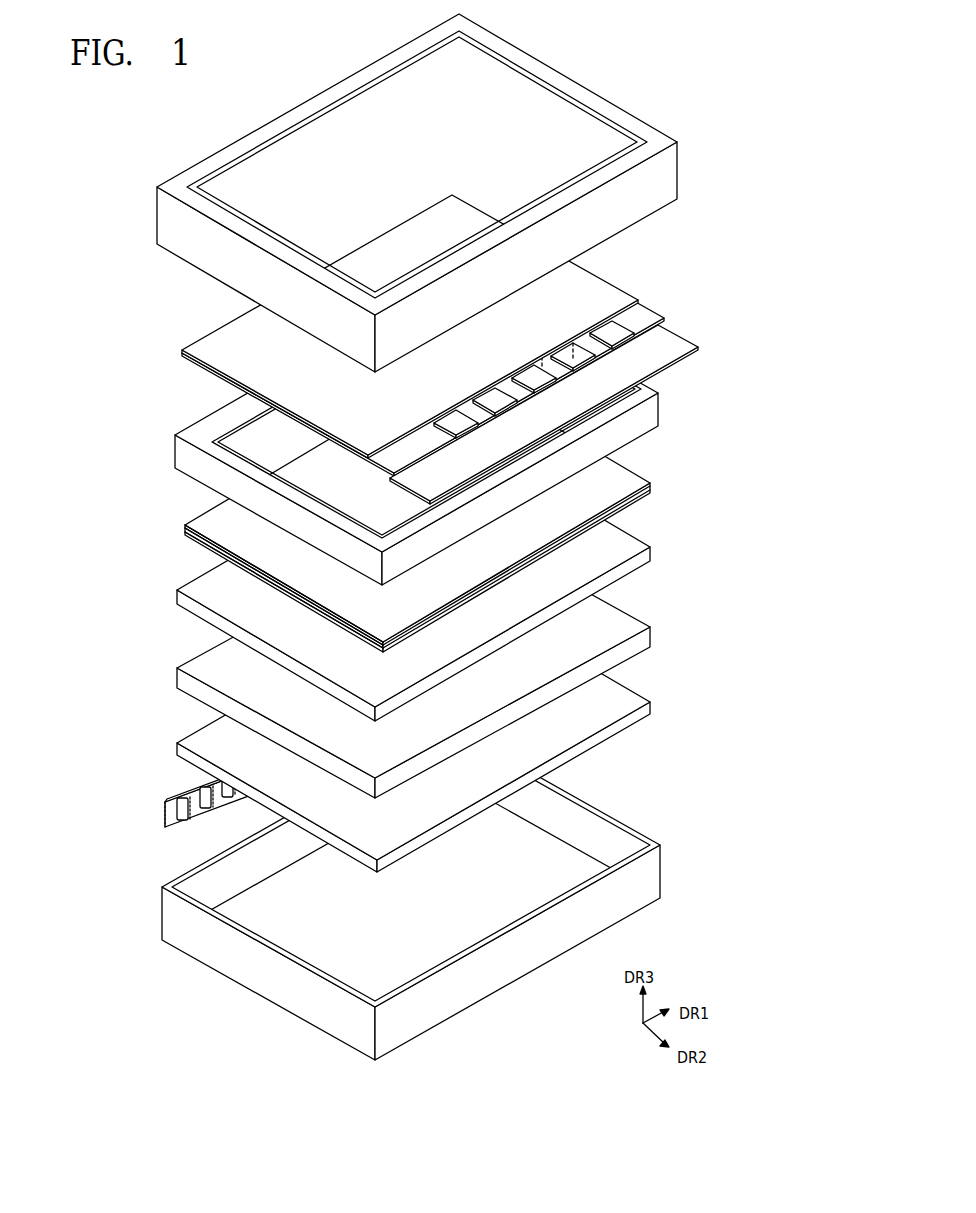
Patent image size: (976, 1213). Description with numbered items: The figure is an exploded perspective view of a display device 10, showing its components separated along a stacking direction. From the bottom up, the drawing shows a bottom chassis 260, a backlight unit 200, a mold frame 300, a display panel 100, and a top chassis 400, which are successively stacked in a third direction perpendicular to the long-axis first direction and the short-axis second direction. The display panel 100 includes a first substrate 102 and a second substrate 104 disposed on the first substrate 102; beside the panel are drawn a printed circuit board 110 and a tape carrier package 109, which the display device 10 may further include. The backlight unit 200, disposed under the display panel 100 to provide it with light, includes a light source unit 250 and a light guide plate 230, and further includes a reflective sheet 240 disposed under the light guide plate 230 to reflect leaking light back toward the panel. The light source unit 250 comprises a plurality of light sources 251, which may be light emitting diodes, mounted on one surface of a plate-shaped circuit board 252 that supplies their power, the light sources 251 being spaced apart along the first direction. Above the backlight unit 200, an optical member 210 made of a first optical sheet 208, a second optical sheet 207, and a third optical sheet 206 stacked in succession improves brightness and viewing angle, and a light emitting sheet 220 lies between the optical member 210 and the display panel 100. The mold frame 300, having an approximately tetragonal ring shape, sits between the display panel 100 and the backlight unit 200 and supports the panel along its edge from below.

The display device 10 is at (381, 535).
The display panel 100 is at (454, 349).
The first substrate 102 is at (574, 288).
The second substrate 104 is at (560, 274).
The tape carrier package 109 is at (630, 298).
The printed circuit board 110 is at (650, 352).
The backlight unit 200 is at (340, 788).
The third optical sheet 206 is at (188, 525).
The second optical sheet 207 is at (192, 531).
The first optical sheet 208 is at (196, 537).
The optical member 210 is at (359, 509).
The light emitting sheet 220 is at (182, 598).
The light guide plate 230 is at (178, 678).
The reflective sheet 240 is at (205, 735).
The light source unit 250 is at (166, 817).
The light source 251 is at (190, 812).
The circuit board 252 is at (202, 808).
The bottom chassis 260 is at (175, 920).
The mold frame 300 is at (660, 418).
The top chassis 400 is at (675, 177).